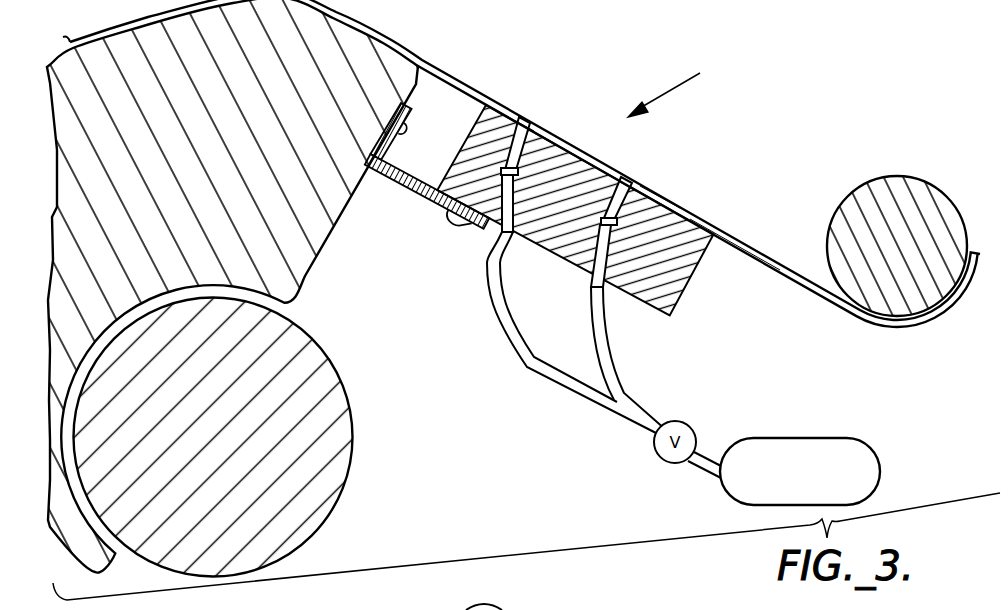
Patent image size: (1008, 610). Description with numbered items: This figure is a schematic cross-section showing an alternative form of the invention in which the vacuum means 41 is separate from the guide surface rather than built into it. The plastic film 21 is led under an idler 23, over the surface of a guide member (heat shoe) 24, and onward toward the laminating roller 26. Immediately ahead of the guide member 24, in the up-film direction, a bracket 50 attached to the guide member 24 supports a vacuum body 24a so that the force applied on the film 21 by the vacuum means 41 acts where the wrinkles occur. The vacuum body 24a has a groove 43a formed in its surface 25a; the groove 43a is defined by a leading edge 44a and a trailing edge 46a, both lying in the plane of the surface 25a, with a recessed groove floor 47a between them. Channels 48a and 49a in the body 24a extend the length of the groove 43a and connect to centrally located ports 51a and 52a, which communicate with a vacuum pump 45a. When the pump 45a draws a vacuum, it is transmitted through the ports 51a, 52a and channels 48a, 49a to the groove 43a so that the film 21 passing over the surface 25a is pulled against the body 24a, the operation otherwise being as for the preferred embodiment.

The plastic film 21 is at (437, 64).
The idler 23 is at (874, 180).
The guide member (heat shoe) 24 is at (324, 240).
The vacuum body 24a is at (696, 265).
The surface of the vacuum body 25a is at (690, 214).
The laminating roller 26 is at (333, 381).
The vacuum means 41 is at (433, 609).
The groove 43a is at (547, 137).
The leading edge 44a is at (656, 195).
The vacuum pump 45a is at (785, 436).
The trailing edge 46a is at (531, 121).
The recessed groove floor 47a is at (597, 163).
The channel 48a is at (526, 118).
The channel 49a is at (630, 181).
The bracket 50 is at (407, 184).
The port 51a is at (500, 228).
The port 52a is at (597, 253).